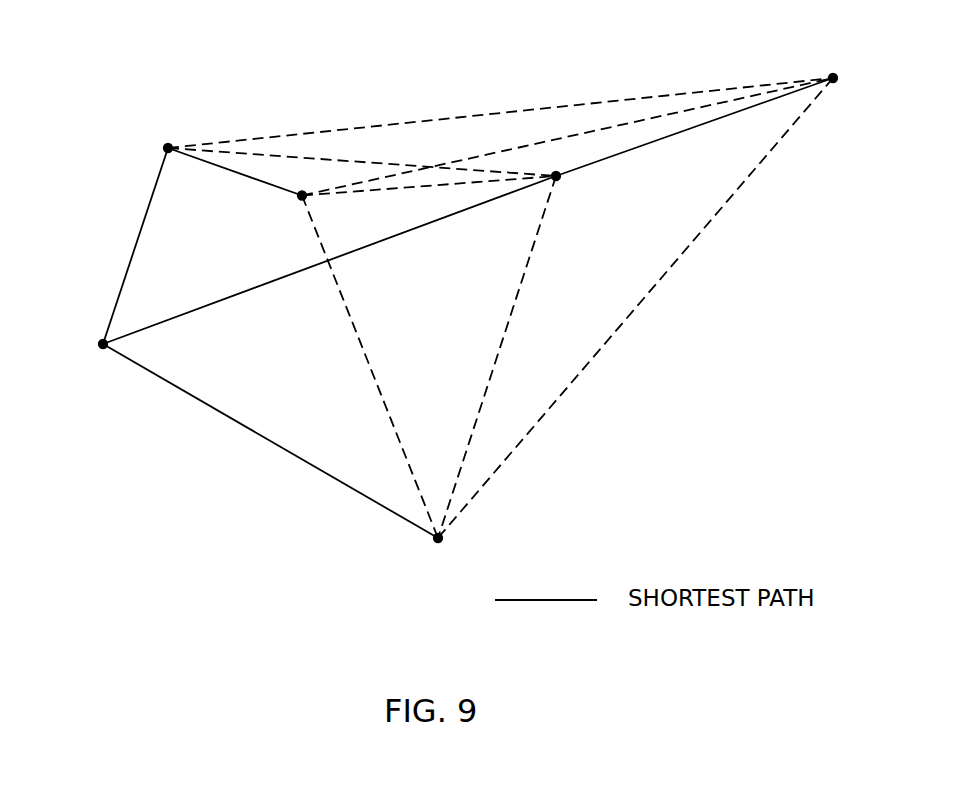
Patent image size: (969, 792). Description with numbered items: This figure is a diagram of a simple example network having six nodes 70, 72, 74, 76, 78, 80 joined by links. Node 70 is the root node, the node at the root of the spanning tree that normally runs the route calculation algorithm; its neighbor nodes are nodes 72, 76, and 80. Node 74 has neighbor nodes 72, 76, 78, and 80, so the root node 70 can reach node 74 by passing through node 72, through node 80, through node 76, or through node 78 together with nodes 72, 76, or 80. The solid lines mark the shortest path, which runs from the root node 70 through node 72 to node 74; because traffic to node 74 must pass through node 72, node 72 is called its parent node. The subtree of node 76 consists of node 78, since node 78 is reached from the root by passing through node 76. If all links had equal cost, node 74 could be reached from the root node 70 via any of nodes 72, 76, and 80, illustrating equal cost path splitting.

The root node 70 is at (79, 303).
The parent node 72 is at (160, 140).
The node 74 is at (294, 188).
The node 76 is at (548, 168).
The node 78 is at (765, 61).
The node 80 is at (430, 530).